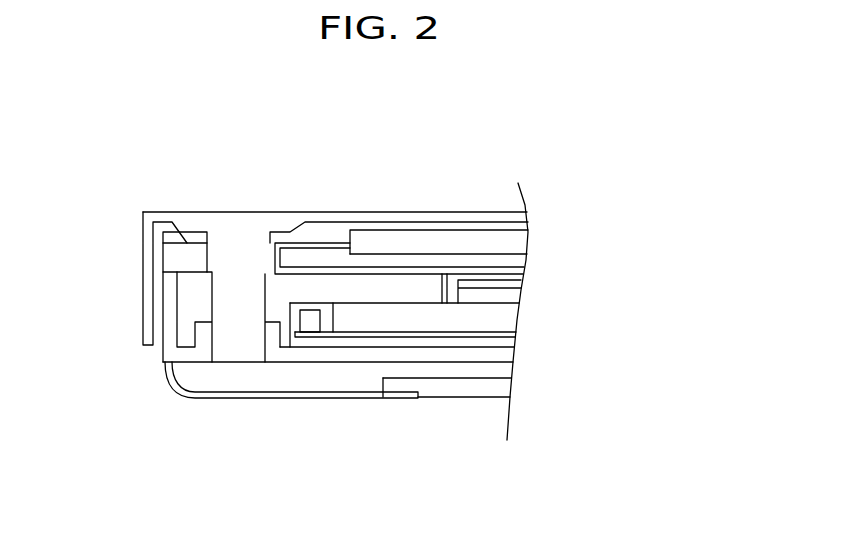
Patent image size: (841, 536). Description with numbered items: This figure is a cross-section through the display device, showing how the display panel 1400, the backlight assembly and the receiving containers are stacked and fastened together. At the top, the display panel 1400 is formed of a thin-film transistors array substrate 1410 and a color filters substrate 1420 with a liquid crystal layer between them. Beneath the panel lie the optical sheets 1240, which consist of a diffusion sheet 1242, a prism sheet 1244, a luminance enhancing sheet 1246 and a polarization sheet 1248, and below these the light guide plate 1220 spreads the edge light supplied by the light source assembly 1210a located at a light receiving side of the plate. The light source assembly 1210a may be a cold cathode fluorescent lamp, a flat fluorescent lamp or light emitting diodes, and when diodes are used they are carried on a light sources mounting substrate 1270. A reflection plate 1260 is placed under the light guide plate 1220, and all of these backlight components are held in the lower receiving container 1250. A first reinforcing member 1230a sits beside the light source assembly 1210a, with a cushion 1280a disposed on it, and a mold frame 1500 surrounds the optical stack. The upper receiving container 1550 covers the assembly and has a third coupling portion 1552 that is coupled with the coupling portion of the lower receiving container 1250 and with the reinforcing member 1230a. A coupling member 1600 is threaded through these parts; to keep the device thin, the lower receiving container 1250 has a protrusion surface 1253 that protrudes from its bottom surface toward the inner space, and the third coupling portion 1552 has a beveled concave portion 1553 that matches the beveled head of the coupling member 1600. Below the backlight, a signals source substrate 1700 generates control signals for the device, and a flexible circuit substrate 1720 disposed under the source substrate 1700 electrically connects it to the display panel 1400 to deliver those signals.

The display panel 1400 is at (515, 252).
The thin-film transistors array substrate 1410 is at (524, 265).
The color filters substrate 1420 is at (524, 242).
The optical sheets 1240 is at (480, 312).
The diffusion sheet 1242 is at (511, 333).
The prism sheet 1244 is at (515, 322).
The luminance enhancing sheet 1246 is at (520, 304).
The polarization sheet 1248 is at (524, 279).
The light guide plate 1220 is at (507, 340).
The reflection plate 1260 is at (503, 350).
The light sources mounting substrate 1270 is at (500, 362).
The light source assembly 1210a is at (310, 327).
The first reinforcing member 1230a is at (388, 290).
The cushion 1280a is at (445, 272).
The lower receiving container 1250 is at (387, 357).
The protrusion surface 1253 is at (205, 320).
The mold frame 1500 is at (178, 263).
The upper receiving container 1550 is at (320, 211).
The third coupling portion 1552 is at (257, 211).
The concave portion 1553 is at (187, 240).
The coupling member 1600 is at (235, 335).
The signals source substrate 1700 is at (447, 387).
The flexible circuit substrate 1720 is at (207, 400).